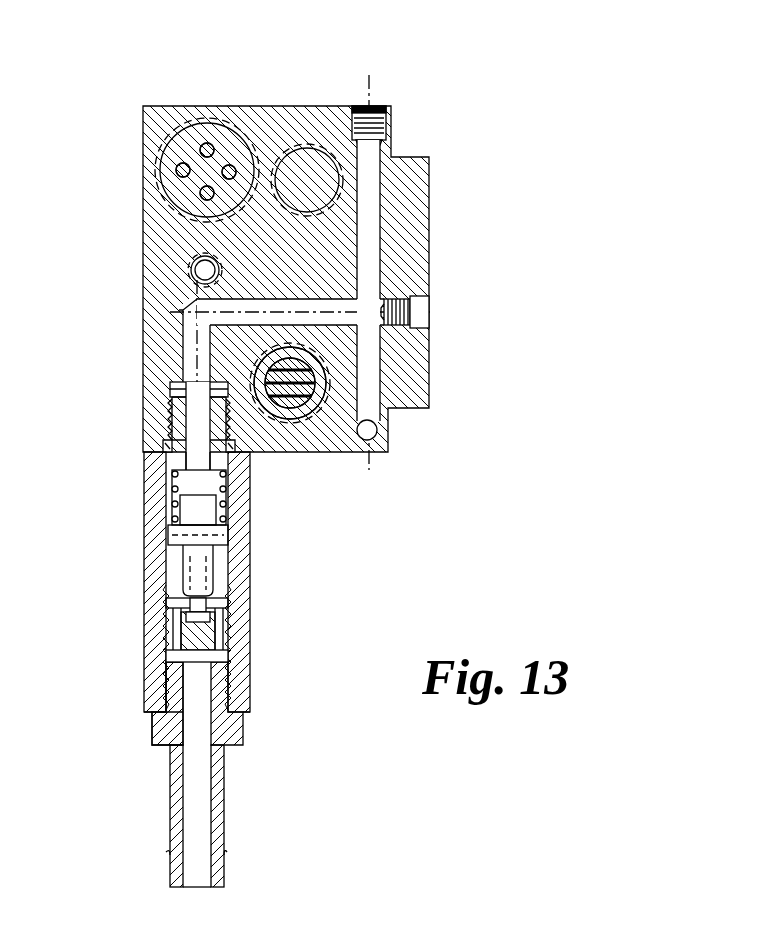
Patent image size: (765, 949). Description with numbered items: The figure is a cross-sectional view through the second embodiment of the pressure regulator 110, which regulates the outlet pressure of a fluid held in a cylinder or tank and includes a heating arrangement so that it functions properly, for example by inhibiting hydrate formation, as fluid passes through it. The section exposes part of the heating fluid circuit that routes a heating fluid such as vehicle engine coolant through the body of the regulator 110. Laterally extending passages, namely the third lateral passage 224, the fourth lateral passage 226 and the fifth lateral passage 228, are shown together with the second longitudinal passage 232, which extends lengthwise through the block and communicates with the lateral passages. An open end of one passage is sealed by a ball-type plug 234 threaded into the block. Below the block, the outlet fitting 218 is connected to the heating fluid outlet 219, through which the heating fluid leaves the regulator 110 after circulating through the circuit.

The pressure regulator 110 is at (497, 115).
The outlet fitting 218 is at (143, 507).
The heating fluid outlet 219 is at (143, 455).
The third lateral passage 224 is at (376, 433).
The fourth lateral passage 226 is at (383, 352).
The fifth lateral passage 228 is at (197, 352).
The second longitudinal passage 232 is at (325, 301).
The ball-type plug 234 is at (428, 309).